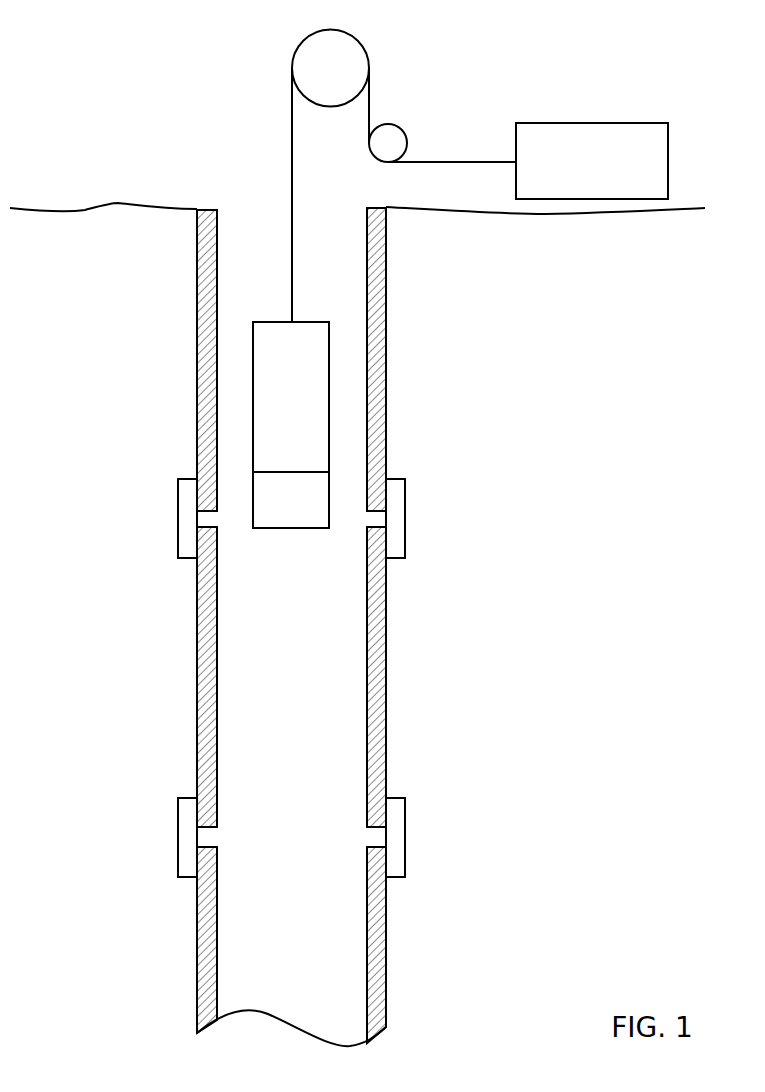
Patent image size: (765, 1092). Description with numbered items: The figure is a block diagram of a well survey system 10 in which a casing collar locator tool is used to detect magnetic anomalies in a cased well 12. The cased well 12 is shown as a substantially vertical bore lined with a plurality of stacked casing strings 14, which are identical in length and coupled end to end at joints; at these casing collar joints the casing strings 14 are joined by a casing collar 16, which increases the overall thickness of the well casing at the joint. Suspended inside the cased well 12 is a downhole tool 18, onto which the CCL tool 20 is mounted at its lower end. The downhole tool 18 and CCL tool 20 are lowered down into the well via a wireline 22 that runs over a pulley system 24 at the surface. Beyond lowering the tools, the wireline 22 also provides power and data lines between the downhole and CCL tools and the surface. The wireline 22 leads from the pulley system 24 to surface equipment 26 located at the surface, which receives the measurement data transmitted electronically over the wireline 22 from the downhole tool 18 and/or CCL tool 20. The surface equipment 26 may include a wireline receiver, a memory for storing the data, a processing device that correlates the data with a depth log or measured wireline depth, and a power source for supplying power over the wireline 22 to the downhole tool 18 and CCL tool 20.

The well survey system 10 is at (178, 50).
The cased well 12 is at (234, 180).
The casing strings 14 is at (197, 345).
The casing collar 16 is at (178, 510).
The downhole tool 18 is at (291, 397).
The casing collar locator (CCL) tool 20 is at (291, 500).
The wireline 22 is at (292, 212).
The pulley system 24 is at (386, 122).
The surface equipment 26 is at (593, 122).